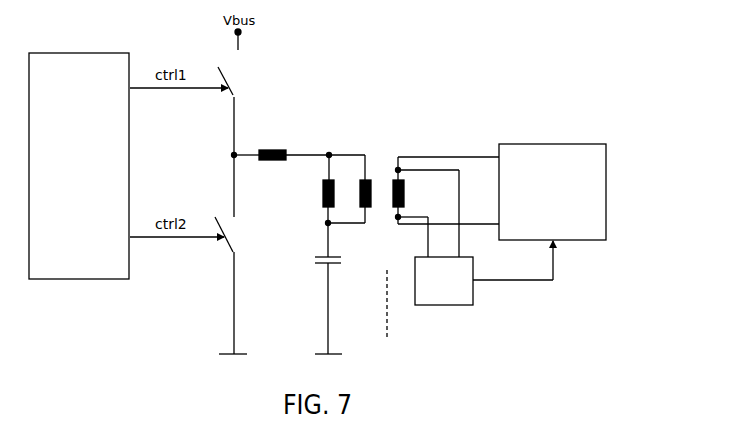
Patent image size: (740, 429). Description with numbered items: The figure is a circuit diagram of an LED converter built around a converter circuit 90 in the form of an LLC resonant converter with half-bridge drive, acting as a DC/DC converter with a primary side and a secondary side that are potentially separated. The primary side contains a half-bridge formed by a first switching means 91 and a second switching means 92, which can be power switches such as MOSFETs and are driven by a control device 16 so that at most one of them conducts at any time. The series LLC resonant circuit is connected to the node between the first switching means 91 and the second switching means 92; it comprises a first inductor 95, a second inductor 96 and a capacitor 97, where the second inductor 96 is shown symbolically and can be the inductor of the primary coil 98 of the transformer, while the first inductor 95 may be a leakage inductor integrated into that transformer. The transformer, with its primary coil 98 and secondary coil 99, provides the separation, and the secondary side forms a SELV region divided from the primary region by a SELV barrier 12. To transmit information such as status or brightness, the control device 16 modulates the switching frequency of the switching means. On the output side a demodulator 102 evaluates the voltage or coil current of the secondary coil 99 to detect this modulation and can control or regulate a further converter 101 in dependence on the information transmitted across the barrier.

The converter circuit 90 is at (79, 139).
The control device 16 is at (89, 170).
The first switching means 91 is at (208, 56).
The second switching means 92 is at (217, 248).
The first inductor 95 is at (279, 148).
The second inductor 96 is at (323, 196).
The capacitor 97 is at (315, 268).
The primary coil 98 is at (371, 214).
The secondary coil 99 is at (391, 169).
The further converter 101 is at (567, 204).
The demodulator 102 is at (458, 292).
The SELV barrier 12 is at (387, 340).